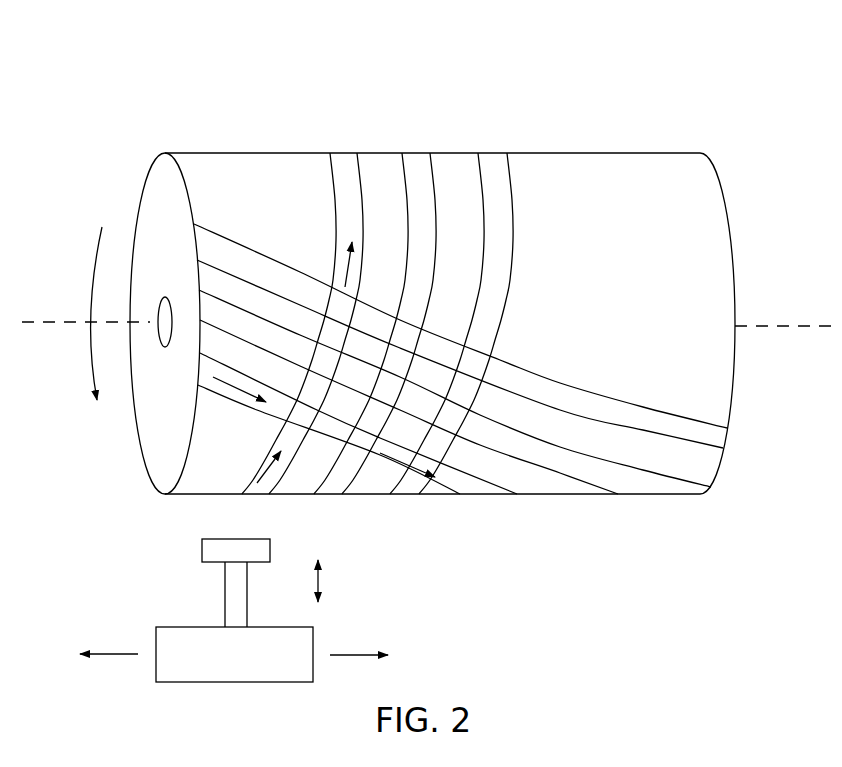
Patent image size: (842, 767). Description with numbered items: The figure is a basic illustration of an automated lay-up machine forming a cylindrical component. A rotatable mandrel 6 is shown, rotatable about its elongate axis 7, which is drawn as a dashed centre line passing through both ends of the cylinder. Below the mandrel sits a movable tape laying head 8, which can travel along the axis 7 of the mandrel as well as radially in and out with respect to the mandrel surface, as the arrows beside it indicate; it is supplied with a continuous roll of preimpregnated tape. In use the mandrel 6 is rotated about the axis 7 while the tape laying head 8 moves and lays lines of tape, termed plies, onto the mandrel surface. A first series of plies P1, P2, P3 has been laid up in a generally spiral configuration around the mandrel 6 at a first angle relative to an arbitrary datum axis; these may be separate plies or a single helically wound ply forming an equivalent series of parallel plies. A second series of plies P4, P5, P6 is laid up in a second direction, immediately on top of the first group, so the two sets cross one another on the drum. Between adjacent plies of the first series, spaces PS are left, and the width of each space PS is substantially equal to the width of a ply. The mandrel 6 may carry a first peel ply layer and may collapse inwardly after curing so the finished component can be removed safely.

The rotatable mandrel 6 is at (725, 202).
The elongate axis 7 is at (793, 327).
The tape laying head 8 is at (224, 603).
The ply P1 is at (338, 156).
The ply P2 is at (411, 156).
The ply P3 is at (491, 156).
The ply P4 is at (453, 486).
The ply P5 is at (657, 487).
The ply P6 is at (720, 435).
The space PS is at (373, 156).